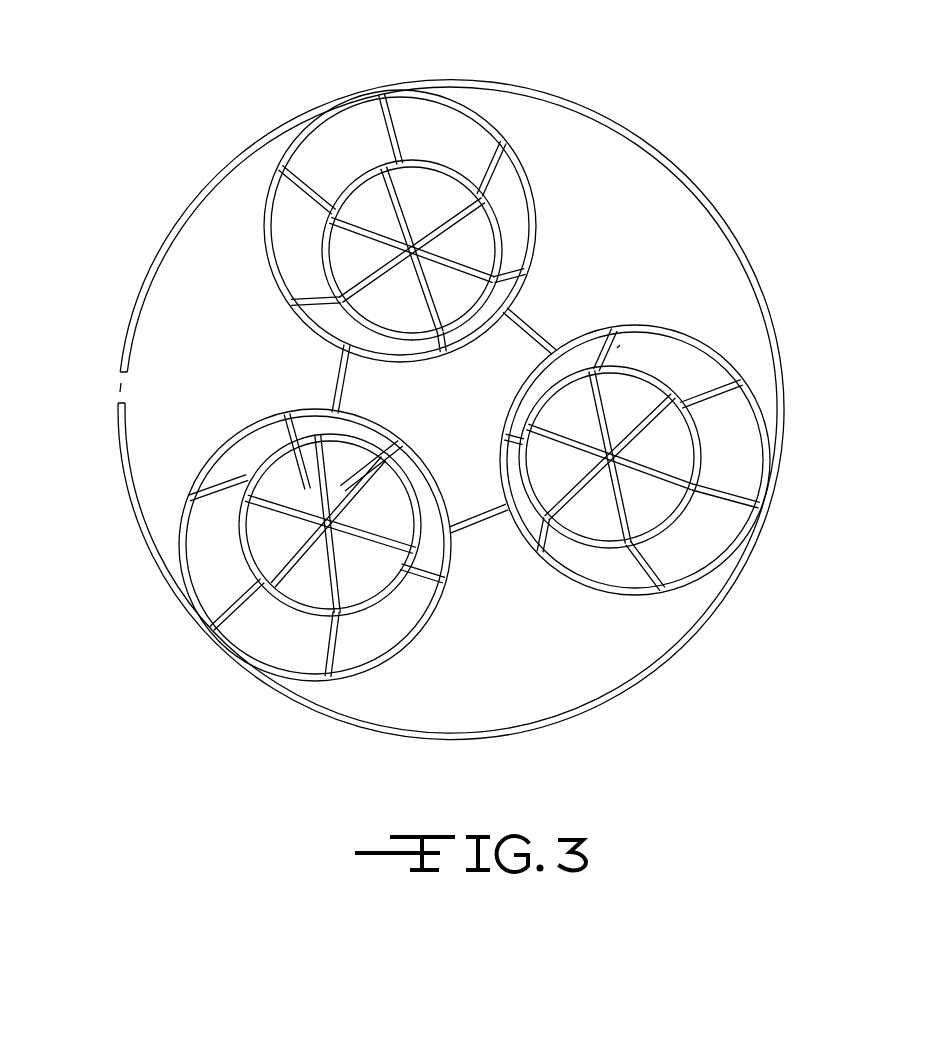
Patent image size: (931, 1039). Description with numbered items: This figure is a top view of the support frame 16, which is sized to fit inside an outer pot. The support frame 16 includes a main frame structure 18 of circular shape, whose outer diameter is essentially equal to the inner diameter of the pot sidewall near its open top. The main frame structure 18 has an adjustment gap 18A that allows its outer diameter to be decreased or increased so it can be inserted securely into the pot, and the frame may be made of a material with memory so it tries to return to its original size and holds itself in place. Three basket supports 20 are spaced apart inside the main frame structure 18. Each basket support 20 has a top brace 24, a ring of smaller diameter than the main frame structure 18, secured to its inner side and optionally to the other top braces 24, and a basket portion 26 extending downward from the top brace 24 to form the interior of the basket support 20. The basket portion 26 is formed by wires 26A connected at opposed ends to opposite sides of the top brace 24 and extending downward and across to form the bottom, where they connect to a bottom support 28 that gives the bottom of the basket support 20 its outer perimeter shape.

The support frame 16 is at (772, 180).
The main frame structure 18 is at (692, 628).
The adjustment gap 18A is at (118, 388).
The basket support 20 is at (700, 466).
The top brace 24 is at (435, 185).
The basket portion 26 is at (277, 450).
The wires 26A is at (613, 342).
The bottom support 28 is at (500, 231).